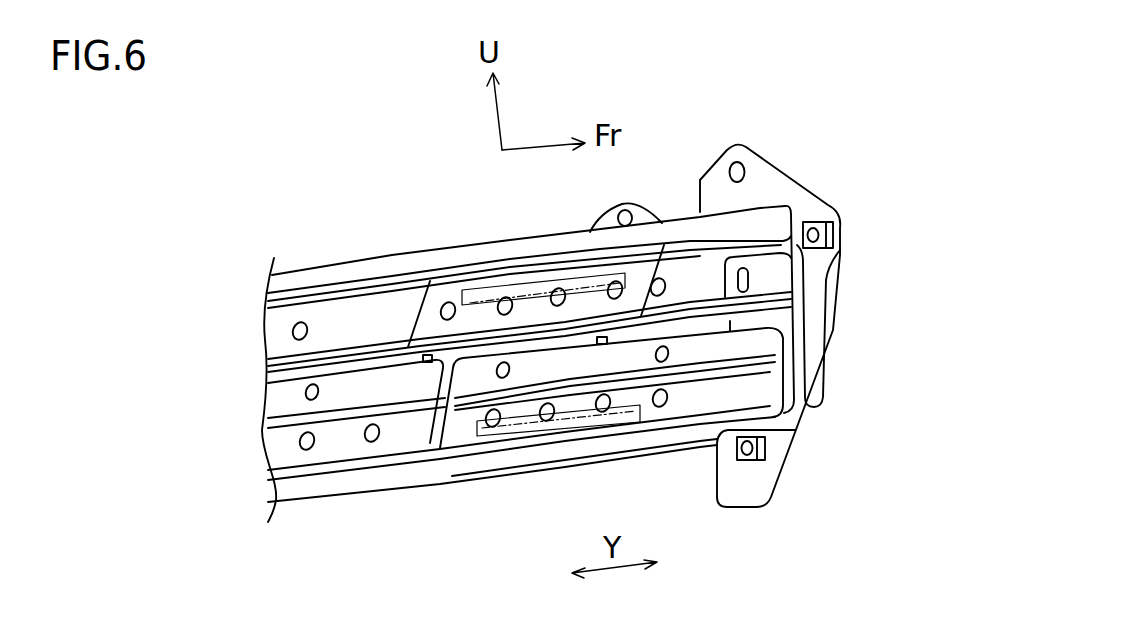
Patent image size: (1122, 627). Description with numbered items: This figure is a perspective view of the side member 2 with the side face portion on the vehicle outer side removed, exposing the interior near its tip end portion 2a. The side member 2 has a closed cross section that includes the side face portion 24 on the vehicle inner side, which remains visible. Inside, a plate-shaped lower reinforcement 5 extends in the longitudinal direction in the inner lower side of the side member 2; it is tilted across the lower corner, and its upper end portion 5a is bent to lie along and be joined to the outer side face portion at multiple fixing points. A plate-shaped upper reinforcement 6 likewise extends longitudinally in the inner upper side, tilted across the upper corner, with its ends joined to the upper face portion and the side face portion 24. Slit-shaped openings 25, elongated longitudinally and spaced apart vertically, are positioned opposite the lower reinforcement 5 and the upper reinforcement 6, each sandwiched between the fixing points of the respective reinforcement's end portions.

The side member 2 is at (398, 217).
The tip end portion 2a is at (813, 311).
The lower reinforcement 5 is at (694, 406).
The upper end portion 5a is at (762, 345).
The upper reinforcement 6 is at (428, 314).
The side face portion on the vehicle inner side 24 is at (690, 274).
The slit-shaped openings 25 is at (484, 284).